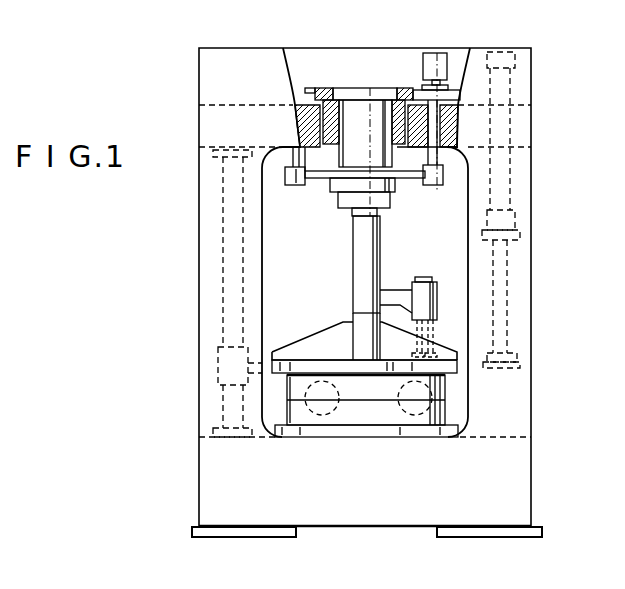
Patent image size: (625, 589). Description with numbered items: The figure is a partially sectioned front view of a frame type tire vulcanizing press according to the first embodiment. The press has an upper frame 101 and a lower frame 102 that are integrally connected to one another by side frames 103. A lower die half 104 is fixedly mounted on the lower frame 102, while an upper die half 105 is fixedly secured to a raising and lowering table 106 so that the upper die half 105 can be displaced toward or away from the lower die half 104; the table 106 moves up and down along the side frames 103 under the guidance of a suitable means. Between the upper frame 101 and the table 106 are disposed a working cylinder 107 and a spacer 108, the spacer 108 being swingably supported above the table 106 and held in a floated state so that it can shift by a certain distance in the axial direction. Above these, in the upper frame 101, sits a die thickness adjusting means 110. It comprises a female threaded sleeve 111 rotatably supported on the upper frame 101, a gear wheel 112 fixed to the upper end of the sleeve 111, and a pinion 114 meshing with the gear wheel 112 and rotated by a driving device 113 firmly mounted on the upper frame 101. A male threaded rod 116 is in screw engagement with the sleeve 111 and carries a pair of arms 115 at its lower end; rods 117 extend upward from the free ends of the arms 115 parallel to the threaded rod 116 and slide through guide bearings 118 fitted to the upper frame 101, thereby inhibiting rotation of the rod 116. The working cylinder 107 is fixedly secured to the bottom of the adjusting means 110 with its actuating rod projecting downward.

The upper frame 101 is at (236, 48).
The lower frame 102 is at (357, 527).
The side frames 103 is at (199, 287).
The lower die half 104 is at (447, 413).
The upper die half 105 is at (447, 389).
The raising and lowering table 106 is at (313, 335).
The working cylinder 107 is at (417, 190).
The spacer 108 is at (382, 261).
The die thickness adjusting means 110 is at (317, 76).
The female threaded sleeve 111 is at (325, 153).
The gear wheel 112 is at (405, 88).
The driving device 113 is at (439, 53).
The pinion 114 is at (447, 88).
The arms 115 is at (433, 186).
The male threaded rod 116 is at (365, 88).
The rods 117 is at (447, 150).
The guide bearings 118 is at (457, 122).